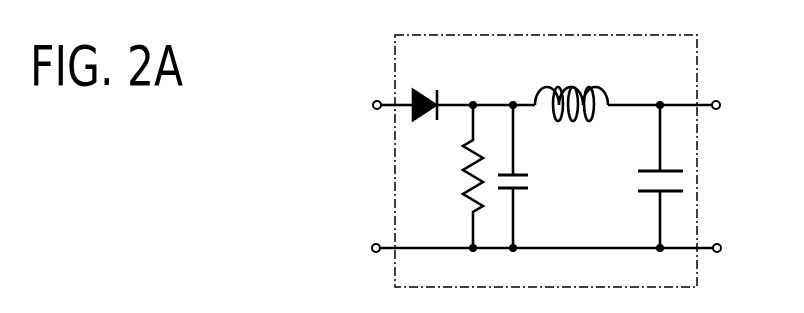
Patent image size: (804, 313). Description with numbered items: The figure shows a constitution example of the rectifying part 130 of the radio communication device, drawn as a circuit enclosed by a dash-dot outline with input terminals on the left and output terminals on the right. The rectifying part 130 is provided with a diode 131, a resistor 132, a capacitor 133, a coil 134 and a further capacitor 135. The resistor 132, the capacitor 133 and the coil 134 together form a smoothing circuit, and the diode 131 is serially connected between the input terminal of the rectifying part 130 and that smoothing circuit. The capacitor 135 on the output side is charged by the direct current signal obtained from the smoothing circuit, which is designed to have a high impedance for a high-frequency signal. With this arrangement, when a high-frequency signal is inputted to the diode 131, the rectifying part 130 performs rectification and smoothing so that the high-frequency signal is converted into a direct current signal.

The rectifying part 130 is at (395, 200).
The diode 131 is at (425, 92).
The resistor 132 is at (460, 182).
The capacitor 133 is at (523, 174).
The coil 134 is at (602, 88).
The capacitor 135 is at (640, 192).